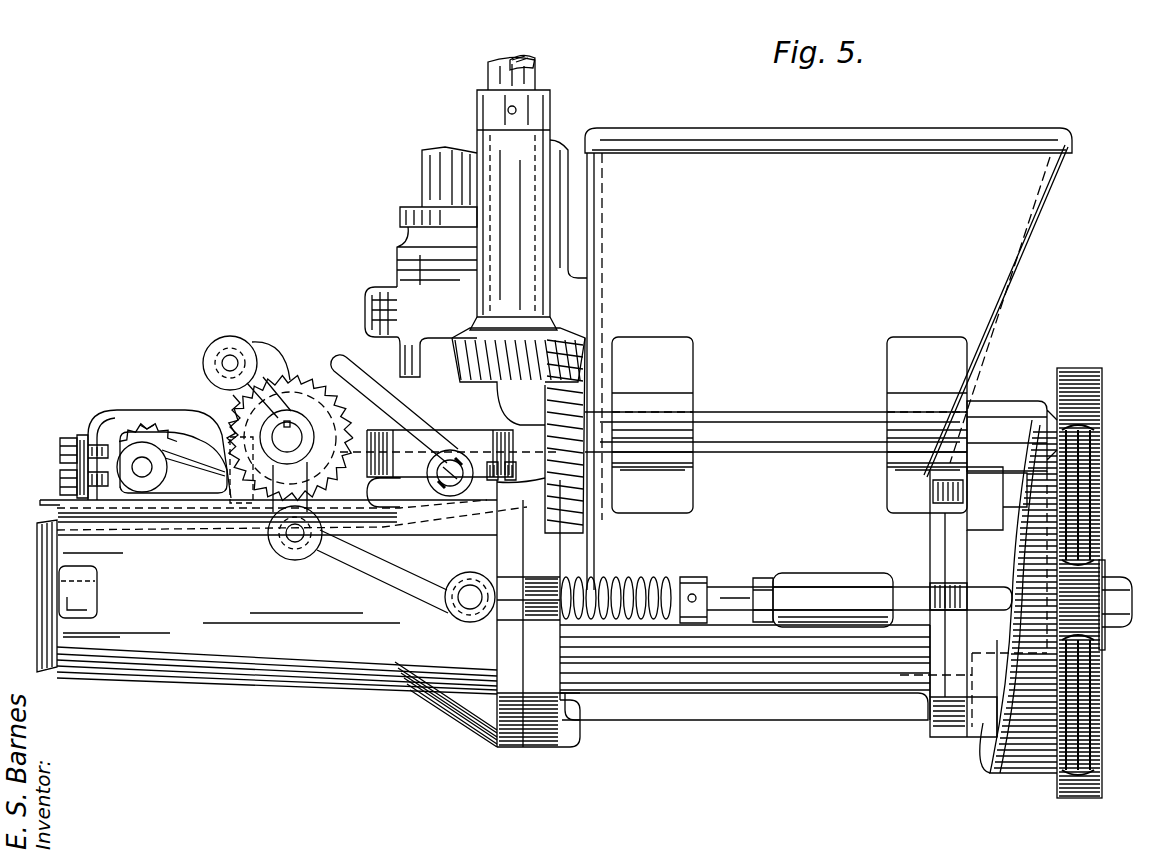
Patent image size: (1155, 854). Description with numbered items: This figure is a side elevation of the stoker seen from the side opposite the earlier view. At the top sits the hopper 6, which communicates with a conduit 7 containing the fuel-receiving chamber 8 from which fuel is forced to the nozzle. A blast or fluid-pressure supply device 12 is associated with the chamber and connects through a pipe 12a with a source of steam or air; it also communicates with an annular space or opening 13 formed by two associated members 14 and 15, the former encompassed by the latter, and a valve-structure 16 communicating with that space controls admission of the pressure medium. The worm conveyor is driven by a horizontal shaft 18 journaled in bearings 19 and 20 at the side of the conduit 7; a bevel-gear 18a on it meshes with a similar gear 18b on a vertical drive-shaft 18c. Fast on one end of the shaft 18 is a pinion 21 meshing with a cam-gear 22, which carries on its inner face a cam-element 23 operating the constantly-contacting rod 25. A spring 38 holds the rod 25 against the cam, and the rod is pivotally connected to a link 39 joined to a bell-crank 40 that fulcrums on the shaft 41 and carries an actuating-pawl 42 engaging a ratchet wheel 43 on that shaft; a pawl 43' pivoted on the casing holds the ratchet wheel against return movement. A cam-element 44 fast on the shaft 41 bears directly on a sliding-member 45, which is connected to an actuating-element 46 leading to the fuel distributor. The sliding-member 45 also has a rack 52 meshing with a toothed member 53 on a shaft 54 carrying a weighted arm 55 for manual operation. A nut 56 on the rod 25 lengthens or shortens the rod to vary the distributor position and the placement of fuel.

The hopper 6 is at (773, 130).
The conduit 7 is at (776, 667).
The fuel-receiving chamber 8 is at (158, 670).
The blast or fluid-pressure supply device 12 is at (416, 247).
The pipe 12a is at (425, 166).
The annular space or opening 13 is at (402, 527).
The associated member 14 is at (490, 698).
The associated member 15 is at (460, 722).
The valve-structure 16 is at (376, 352).
The horizontal shaft 18 is at (808, 414).
The bevel-gear 18a is at (585, 335).
The bevel-gear 18b is at (565, 325).
The vertical drive-shaft 18c is at (545, 78).
The bearing 19 is at (646, 347).
The bearing 20 is at (916, 347).
The pinion 21 is at (1102, 397).
The cam-gear 22 is at (1088, 776).
The cam-element 23 is at (1030, 780).
The rod 25 is at (724, 588).
The spring 38 is at (656, 568).
The link 39 is at (354, 563).
The bell-crank 40 is at (372, 488).
The shaft 41 is at (292, 422).
The actuating-pawl 42 is at (252, 348).
The ratchet wheel 43 is at (216, 441).
The pawl 43' is at (347, 438).
The cam-element 44 is at (356, 407).
The sliding-member 45 is at (112, 410).
The actuating-element 46 is at (80, 436).
The rack 52 is at (166, 431).
The toothed member 53 is at (139, 426).
The shaft 54 is at (146, 480).
The weighted arm 55 is at (193, 468).
The nut 56 is at (860, 568).